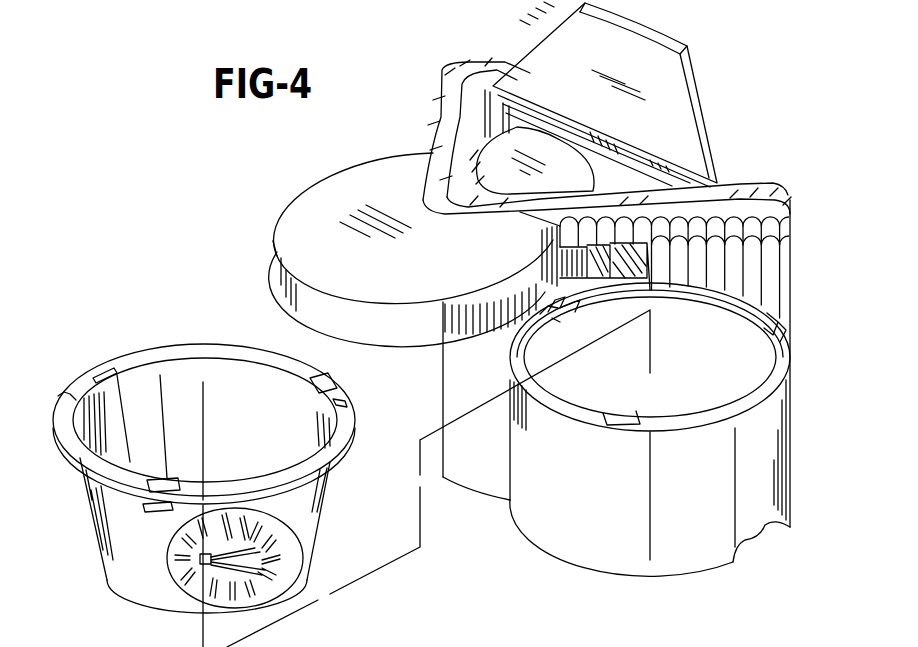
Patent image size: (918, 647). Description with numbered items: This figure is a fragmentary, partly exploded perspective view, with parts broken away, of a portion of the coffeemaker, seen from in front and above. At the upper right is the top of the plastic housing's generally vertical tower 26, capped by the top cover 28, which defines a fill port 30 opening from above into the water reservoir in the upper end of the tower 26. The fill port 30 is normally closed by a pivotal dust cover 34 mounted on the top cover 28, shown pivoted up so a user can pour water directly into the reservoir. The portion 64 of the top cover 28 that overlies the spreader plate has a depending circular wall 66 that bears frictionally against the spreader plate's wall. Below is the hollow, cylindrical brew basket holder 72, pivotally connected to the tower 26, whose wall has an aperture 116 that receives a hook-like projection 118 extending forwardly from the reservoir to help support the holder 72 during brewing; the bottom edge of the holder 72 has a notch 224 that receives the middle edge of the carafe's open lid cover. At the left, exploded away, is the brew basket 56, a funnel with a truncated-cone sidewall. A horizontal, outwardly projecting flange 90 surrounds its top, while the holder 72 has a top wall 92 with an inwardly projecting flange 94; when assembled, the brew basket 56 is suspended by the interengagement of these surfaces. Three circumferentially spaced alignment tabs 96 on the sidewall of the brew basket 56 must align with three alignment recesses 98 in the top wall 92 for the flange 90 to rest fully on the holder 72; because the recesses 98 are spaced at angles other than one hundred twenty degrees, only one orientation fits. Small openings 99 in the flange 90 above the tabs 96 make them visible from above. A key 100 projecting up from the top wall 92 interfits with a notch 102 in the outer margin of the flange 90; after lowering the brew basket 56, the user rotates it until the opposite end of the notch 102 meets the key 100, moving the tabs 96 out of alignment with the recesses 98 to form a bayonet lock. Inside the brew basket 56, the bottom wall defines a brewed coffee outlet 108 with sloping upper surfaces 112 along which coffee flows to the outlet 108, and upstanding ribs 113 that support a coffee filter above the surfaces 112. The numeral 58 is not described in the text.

The tower 26 is at (783, 262).
The top cover 28 is at (753, 164).
The fill port 30 is at (550, 137).
The dust cover 34 is at (693, 80).
The brew basket 56 is at (93, 533).
The container 58 is at (705, 636).
The portion of the top cover 64 is at (362, 167).
The depending circular wall 66 is at (275, 253).
The brew basket holder 72 is at (557, 557).
The flange 90 is at (67, 450).
The top wall 92 is at (697, 424).
The flange 94 is at (760, 388).
The alignment tabs 96 is at (97, 372).
The alignment recesses 98 is at (777, 317).
The openings 99 is at (323, 374).
The key 100 is at (543, 258).
The notch 102 is at (90, 380).
The brewed coffee outlet 108 is at (245, 576).
The sloping upper surfaces 112 is at (280, 533).
The upstanding ribs 113 is at (270, 560).
The aperture 116 is at (547, 313).
The hook-like projection 118 is at (435, 248).
The notch 224 is at (745, 545).